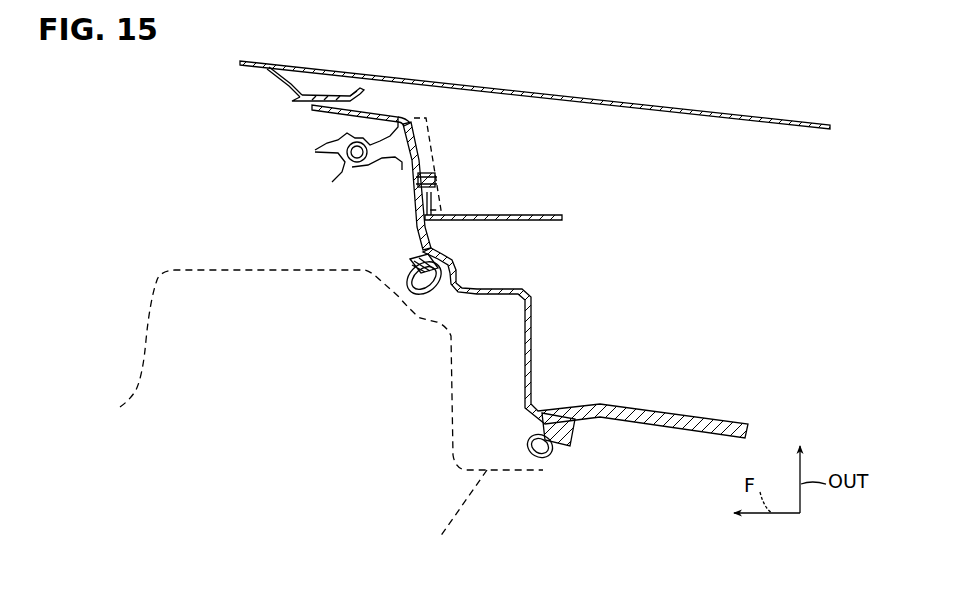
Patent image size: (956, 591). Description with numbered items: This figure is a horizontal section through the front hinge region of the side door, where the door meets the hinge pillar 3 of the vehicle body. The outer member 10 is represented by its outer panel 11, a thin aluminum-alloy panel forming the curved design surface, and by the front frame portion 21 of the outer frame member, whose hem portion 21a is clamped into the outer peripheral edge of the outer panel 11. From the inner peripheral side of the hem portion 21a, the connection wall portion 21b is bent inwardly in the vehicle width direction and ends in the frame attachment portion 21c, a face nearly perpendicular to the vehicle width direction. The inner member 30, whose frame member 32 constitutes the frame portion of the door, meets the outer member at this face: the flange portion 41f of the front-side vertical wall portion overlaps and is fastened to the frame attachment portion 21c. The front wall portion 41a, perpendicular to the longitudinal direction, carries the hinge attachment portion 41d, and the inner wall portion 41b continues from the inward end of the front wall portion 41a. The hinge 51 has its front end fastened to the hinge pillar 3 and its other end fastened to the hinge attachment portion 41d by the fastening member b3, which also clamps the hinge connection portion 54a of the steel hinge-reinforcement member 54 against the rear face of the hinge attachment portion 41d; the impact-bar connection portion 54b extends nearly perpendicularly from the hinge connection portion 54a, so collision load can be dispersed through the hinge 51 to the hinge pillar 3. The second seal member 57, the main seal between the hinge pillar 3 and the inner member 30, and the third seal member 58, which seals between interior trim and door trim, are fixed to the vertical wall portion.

The hinge pillar 3 is at (190, 268).
The outer member 10 is at (535, 81).
The outer panel 11 is at (633, 104).
The front frame portion 21 is at (282, 109).
The hem portion 21a is at (266, 80).
The connection wall portion 21b is at (293, 92).
The frame attachment portion 21c is at (336, 97).
The inner member 30 is at (585, 365).
The frame member 32 is at (585, 381).
The front wall portion 41a is at (417, 229).
The inner wall portion 41b is at (681, 432).
The hinge attachment portion 41d is at (438, 121).
The flange portion 41f is at (345, 117).
The hinge 51 is at (346, 168).
The hinge-reinforcement member 54 is at (508, 229).
The hinge connection portion 54a is at (432, 196).
The impact-bar connection portion 54b is at (505, 223).
The second seal member 57 is at (408, 290).
The third seal member 58 is at (553, 462).
The fastening member b3 is at (437, 180).